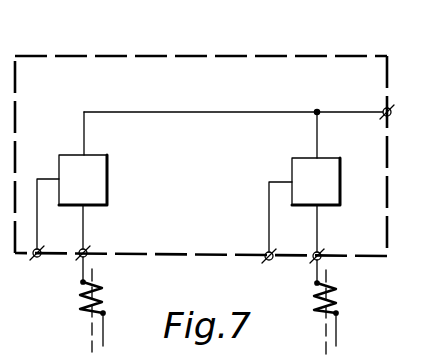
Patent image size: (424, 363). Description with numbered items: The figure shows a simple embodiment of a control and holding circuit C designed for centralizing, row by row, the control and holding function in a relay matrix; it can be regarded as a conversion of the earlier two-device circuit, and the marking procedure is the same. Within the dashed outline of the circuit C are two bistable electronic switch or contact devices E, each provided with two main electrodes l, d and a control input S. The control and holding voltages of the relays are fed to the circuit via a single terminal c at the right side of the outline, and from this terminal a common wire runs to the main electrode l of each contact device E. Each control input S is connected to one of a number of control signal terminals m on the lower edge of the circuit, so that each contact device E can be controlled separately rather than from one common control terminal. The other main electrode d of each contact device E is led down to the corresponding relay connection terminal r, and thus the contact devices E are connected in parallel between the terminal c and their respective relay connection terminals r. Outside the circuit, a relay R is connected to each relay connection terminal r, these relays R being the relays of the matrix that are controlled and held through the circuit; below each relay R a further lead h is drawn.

The control and holding circuit C is at (108, 54).
The link output terminal c is at (246, 112).
The main electrode l is at (85, 157).
The control input S is at (58, 178).
The main electrode d is at (82, 207).
The bistable electronic switch or contact device E is at (96, 206).
The control signal terminal m is at (150, 264).
The relay connection terminal r is at (80, 258).
The relay R is at (104, 297).
The heating lead h is at (104, 336).